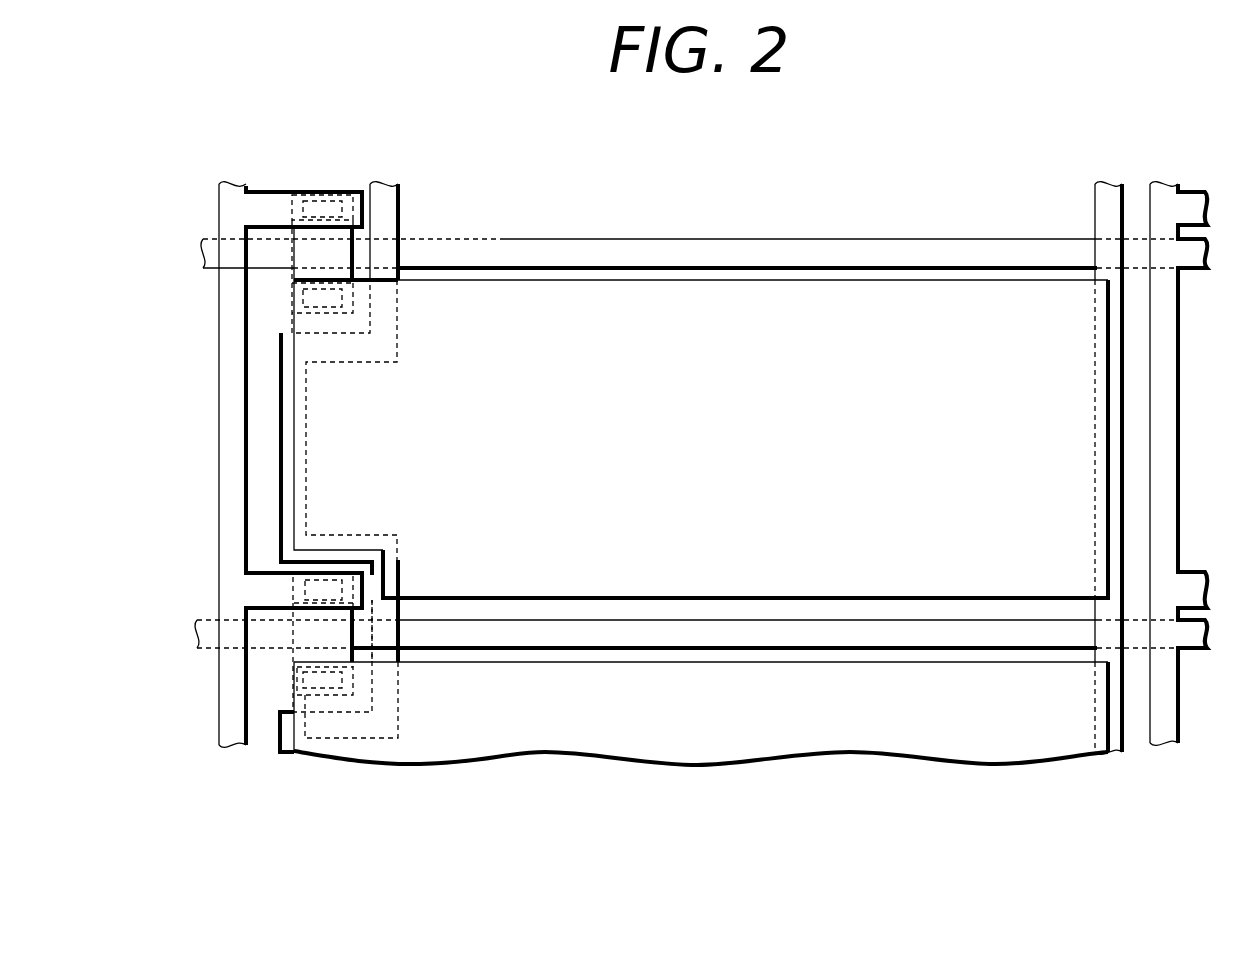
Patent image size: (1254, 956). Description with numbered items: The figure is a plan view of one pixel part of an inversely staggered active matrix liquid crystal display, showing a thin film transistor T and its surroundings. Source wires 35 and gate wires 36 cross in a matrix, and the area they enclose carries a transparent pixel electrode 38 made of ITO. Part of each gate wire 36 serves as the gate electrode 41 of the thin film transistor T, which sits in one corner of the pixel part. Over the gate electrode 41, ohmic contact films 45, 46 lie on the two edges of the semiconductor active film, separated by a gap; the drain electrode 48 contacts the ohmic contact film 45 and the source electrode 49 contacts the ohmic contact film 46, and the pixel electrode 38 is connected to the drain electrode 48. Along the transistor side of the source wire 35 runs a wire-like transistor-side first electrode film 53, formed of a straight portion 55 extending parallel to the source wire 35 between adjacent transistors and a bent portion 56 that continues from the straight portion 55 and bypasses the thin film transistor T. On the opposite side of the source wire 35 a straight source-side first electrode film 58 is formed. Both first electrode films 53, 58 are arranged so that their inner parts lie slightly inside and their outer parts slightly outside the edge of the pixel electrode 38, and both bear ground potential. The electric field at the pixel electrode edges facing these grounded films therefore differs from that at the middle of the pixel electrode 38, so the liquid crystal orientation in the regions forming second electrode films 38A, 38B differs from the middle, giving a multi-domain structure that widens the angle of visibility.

The source wire 35 is at (229, 666).
The gate wire 36 is at (560, 248).
The pixel electrode 38 is at (767, 295).
The second electrode film 38A is at (383, 337).
The second electrode film 38B is at (1104, 421).
The gate electrode 41 is at (300, 252).
The ohmic contact film 45 is at (307, 293).
The ohmic contact film 46 is at (337, 200).
The drain electrode 48 is at (317, 308).
The source electrode 49 is at (330, 208).
The transistor-side first electrode film 53 is at (413, 199).
The straight portion 55 is at (283, 383).
The bent portion 56 is at (390, 253).
The source-side first electrode film 58 is at (1117, 208).
The thin film transistor T is at (272, 284).